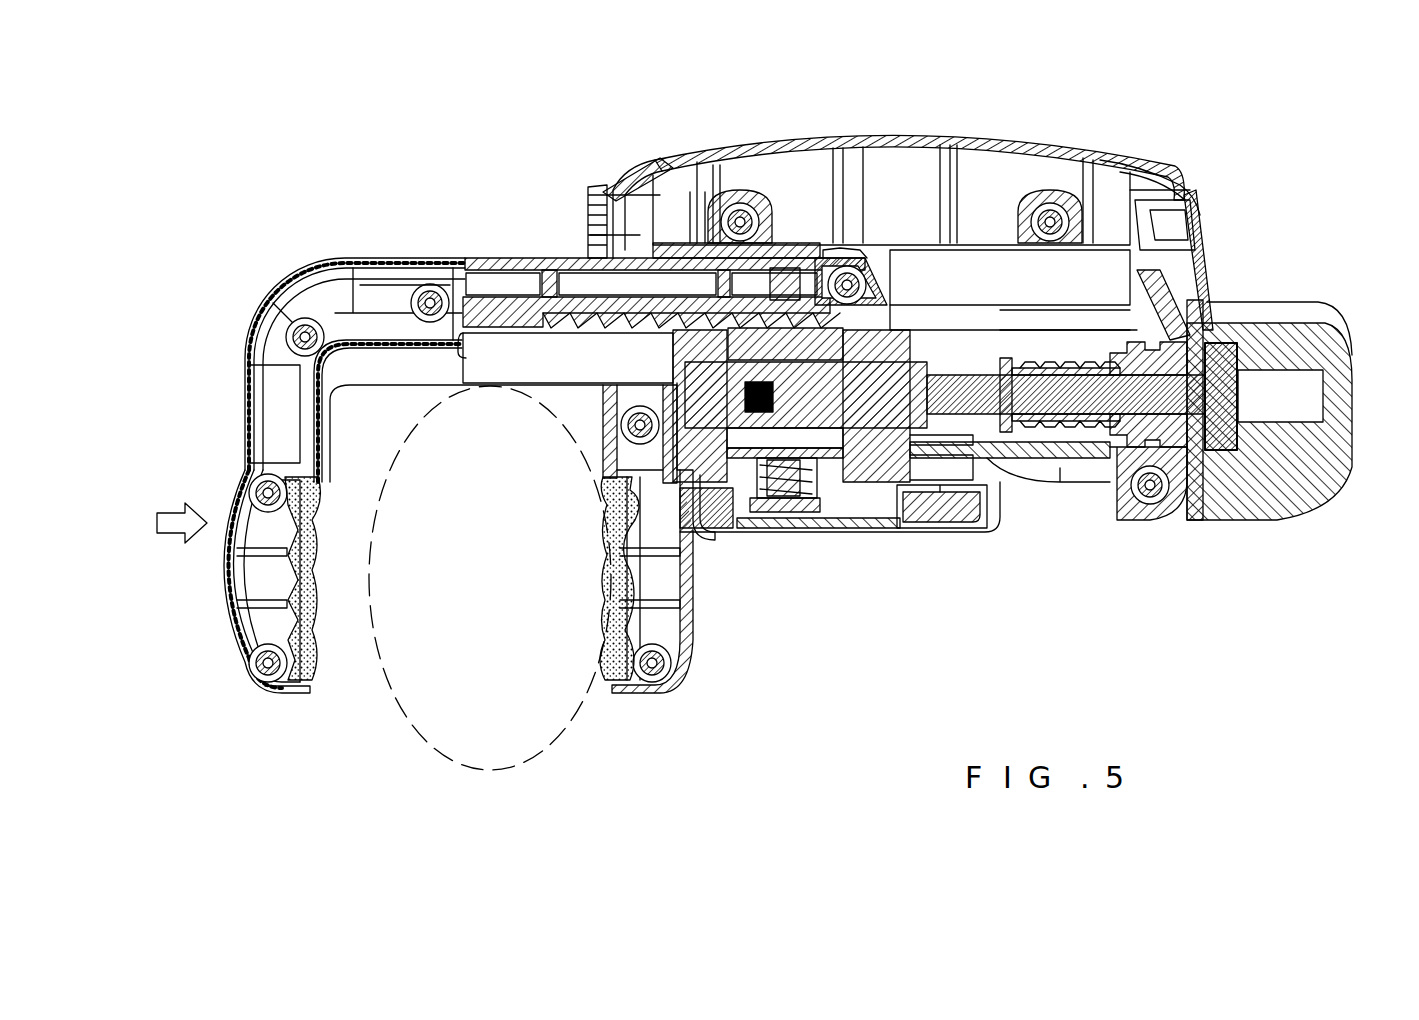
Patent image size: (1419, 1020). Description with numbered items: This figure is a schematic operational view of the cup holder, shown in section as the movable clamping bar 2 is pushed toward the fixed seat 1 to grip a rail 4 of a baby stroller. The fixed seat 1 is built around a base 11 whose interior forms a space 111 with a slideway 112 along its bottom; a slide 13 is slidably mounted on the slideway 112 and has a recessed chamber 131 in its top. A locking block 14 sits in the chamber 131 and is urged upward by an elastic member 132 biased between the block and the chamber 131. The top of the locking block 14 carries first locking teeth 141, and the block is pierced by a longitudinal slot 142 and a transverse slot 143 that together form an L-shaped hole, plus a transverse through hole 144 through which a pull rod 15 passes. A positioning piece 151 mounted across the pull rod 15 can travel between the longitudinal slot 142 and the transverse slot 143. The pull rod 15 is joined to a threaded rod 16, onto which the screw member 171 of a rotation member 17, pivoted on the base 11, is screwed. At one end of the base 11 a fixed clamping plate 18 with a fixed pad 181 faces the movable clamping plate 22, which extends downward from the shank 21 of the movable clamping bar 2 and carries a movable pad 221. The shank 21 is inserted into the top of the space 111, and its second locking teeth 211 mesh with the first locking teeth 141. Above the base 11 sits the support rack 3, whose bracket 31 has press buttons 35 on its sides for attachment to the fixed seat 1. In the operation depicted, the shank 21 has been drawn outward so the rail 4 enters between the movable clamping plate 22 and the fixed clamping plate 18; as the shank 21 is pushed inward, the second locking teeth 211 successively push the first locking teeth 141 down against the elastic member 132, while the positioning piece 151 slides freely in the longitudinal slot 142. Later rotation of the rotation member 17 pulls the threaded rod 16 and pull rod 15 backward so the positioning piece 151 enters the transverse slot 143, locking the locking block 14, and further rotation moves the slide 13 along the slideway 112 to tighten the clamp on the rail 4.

The fixed seat 1 is at (1105, 632).
The base 11 is at (1027, 460).
The space 111 is at (1112, 294).
The slideway 112 is at (950, 470).
The slide 13 is at (975, 330).
The chamber 131 is at (853, 470).
The elastic member 132 is at (755, 540).
The locking block 14 is at (905, 330).
The first locking teeth 141 is at (838, 335).
The longitudinal slot 142 is at (705, 190).
The transverse slot 143 is at (828, 515).
The through hole 144 is at (636, 175).
The pull rod 15 is at (1030, 335).
The positioning piece 151 is at (790, 268).
The threaded rod 16 is at (1085, 450).
The rotation member 17 is at (1305, 470).
The screw member 171 is at (1217, 455).
The fixed clamping plate 18 is at (676, 698).
The fixed pad 181 is at (607, 675).
The movable clamping bar 2 is at (340, 158).
The shank 21 is at (376, 262).
The second locking teeth 211 is at (545, 290).
The movable clamping plate 22 is at (240, 592).
The movable pad 221 is at (292, 636).
The support rack 3 is at (1300, 110).
The bracket 31 is at (1120, 155).
The press button 35 is at (1195, 188).
The rail 4 is at (462, 768).